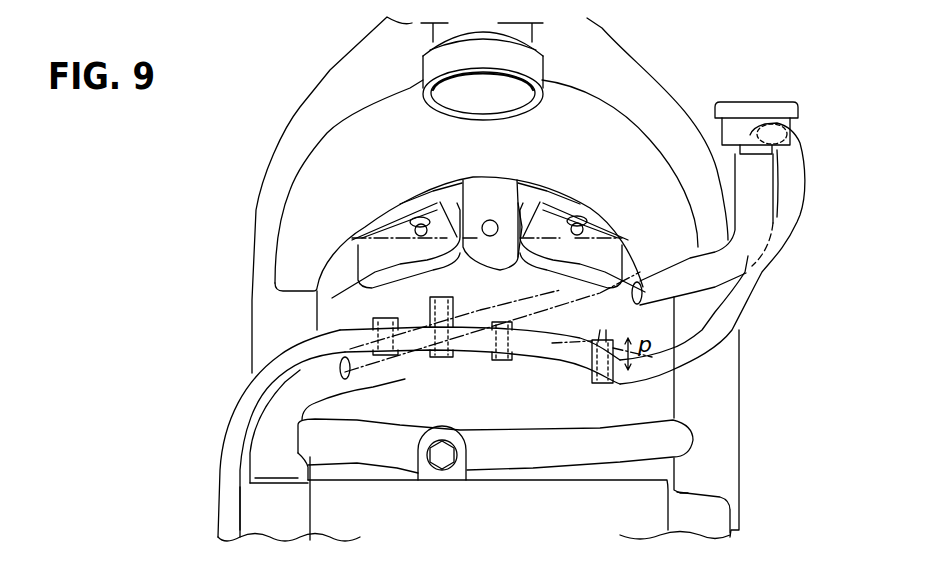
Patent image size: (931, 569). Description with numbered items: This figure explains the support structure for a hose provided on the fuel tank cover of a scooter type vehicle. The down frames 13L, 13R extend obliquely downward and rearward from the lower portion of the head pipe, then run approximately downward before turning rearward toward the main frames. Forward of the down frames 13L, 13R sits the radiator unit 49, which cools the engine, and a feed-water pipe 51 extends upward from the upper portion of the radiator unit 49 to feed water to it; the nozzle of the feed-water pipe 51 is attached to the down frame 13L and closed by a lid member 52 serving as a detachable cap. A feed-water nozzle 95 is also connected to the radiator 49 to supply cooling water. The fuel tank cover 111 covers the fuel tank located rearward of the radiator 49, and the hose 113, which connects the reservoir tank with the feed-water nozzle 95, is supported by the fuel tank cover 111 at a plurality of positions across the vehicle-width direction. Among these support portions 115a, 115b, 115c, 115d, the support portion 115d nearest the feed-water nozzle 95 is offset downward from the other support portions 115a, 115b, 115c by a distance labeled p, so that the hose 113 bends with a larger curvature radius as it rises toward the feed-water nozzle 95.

The down frame 13L is at (720, 392).
The down frame 13R is at (263, 292).
The radiator unit 49 is at (640, 517).
The feed-water pipe 51 is at (273, 463).
The lid member 52 is at (750, 108).
The feed-water nozzle 95 is at (800, 128).
The fuel tank cover 111 is at (345, 317).
The hose 113 is at (232, 433).
The support portion 115a is at (382, 358).
The support portion 115b is at (440, 358).
The support portion 115c is at (500, 362).
The support portion 115d is at (598, 385).